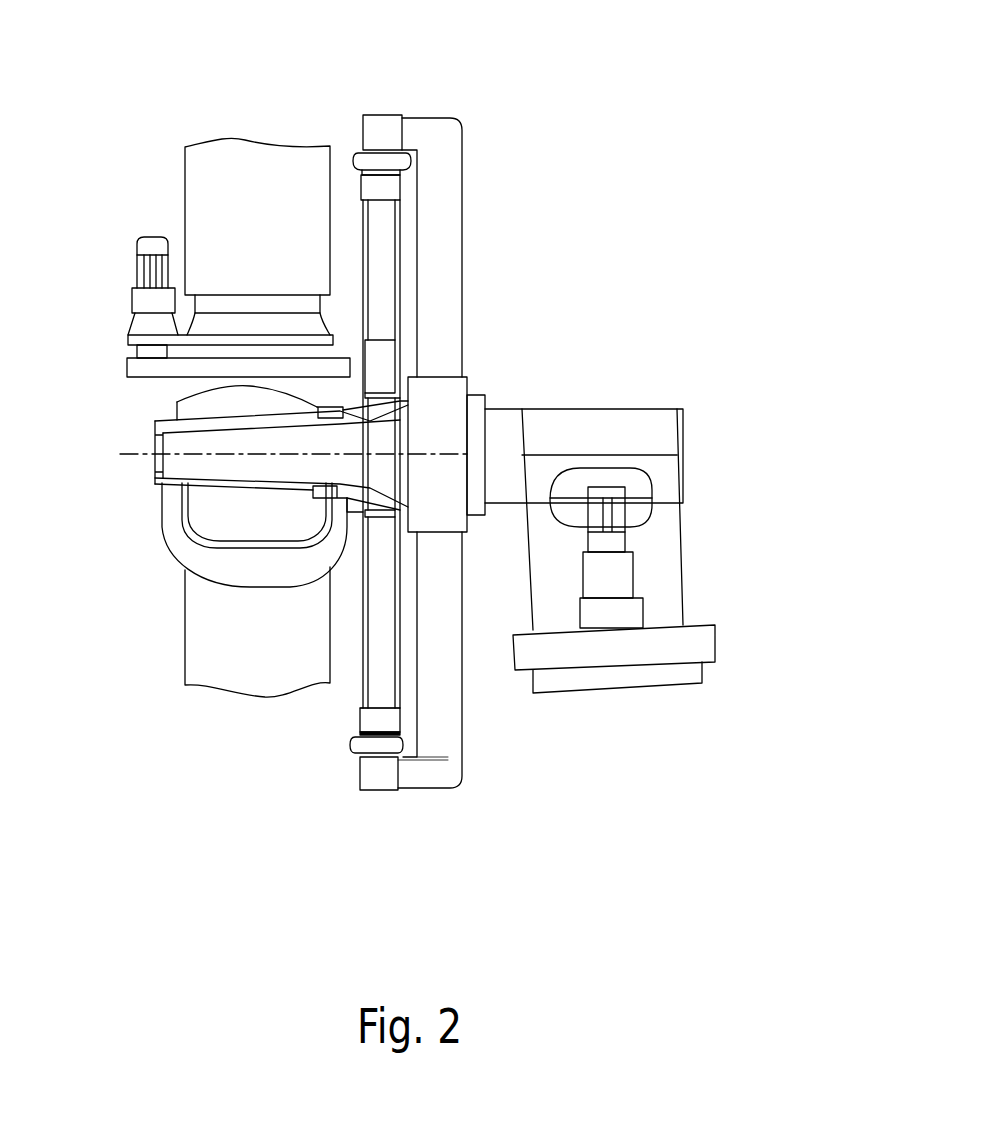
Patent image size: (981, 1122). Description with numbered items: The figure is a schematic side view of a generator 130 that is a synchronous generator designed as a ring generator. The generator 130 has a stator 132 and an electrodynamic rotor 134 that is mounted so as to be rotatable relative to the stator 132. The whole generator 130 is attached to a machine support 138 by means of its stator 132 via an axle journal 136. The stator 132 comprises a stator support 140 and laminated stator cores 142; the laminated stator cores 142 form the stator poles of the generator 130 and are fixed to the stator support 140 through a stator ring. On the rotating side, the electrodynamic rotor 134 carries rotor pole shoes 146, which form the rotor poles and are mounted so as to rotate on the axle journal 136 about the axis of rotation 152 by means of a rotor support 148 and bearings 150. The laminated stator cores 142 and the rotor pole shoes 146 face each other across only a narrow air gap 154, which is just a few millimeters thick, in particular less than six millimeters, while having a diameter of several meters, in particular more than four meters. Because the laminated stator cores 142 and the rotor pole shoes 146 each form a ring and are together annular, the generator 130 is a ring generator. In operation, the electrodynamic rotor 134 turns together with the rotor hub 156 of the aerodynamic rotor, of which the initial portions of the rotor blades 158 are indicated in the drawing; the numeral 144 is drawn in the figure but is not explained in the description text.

The generator 130 is at (528, 90).
The stator 132 is at (487, 181).
The electrodynamic rotor 134 is at (347, 218).
The axle journal 136 is at (243, 457).
The machine support 138 is at (600, 428).
The stator support 140 is at (447, 310).
The laminated stator cores 142 is at (373, 155).
The nut 144 is at (380, 128).
The rotor pole shoes 146 is at (392, 723).
The rotor support 148 is at (388, 253).
The bearings 150 is at (153, 420).
The axis of rotation 152 is at (138, 455).
The air gap 154 is at (348, 718).
The rotor hub 156 is at (223, 550).
The rotor blades 158 is at (212, 210).